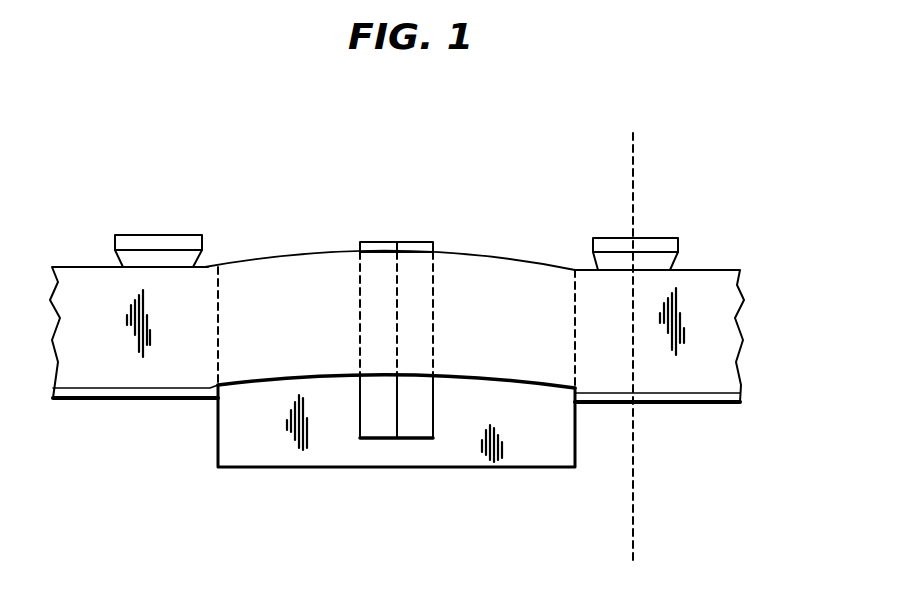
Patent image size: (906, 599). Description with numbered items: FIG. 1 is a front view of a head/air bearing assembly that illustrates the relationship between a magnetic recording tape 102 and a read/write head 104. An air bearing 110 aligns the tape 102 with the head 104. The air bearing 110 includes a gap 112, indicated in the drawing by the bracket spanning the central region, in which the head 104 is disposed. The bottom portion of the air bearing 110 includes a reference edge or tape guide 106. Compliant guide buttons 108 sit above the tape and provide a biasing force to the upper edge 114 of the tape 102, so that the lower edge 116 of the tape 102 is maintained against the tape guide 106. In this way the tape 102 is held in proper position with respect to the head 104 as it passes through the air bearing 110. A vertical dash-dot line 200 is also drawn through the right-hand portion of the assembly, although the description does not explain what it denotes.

The magnetic recording tape 102 is at (727, 312).
The read/write head 104 is at (435, 400).
The tape guide 106 is at (608, 403).
The compliant guide buttons 108 is at (652, 247).
The air bearing 110 is at (222, 306).
The gap 112 is at (583, 178).
The upper edge 114 is at (293, 252).
The lower edge 116 is at (233, 388).
The centerline 200 is at (635, 168).